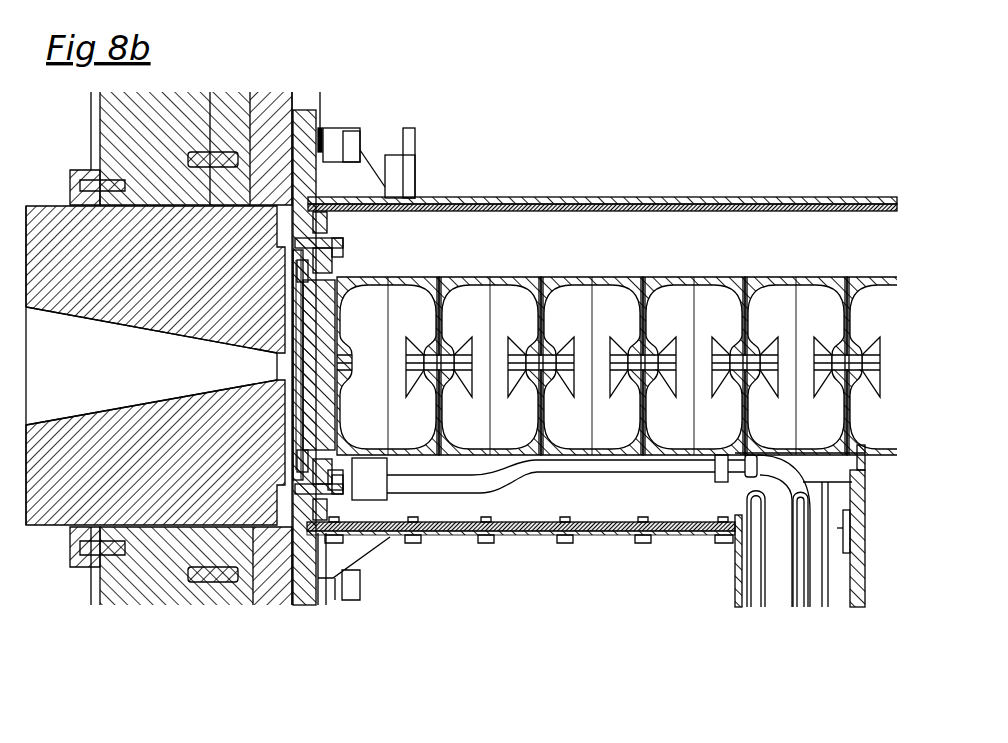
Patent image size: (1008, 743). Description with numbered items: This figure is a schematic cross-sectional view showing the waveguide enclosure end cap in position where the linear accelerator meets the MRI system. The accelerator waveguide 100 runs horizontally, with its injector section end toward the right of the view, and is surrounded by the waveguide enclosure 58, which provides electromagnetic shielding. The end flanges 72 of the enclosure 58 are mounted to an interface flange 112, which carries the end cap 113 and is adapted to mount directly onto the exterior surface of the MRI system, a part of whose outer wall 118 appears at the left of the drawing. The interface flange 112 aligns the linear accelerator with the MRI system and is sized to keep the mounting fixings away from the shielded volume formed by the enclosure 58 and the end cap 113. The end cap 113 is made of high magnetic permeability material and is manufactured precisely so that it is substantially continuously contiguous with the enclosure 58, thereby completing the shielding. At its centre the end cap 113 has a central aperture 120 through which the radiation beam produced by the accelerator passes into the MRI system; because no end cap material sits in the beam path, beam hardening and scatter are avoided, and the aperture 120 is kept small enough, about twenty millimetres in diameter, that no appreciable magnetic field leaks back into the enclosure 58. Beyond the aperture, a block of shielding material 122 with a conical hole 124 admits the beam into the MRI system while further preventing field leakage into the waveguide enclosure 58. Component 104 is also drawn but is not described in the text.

The waveguide enclosure 58 is at (577, 208).
The end flanges 72 is at (345, 178).
The accelerator waveguide 100 is at (680, 358).
The coolant tube 104 is at (572, 473).
The interface flange 112 is at (300, 170).
The end cap 113 is at (300, 272).
The outer wall 118 is at (181, 348).
The central aperture 120 is at (288, 368).
The block of shielding material 122 is at (155, 365).
The conical hole 124 is at (146, 407).